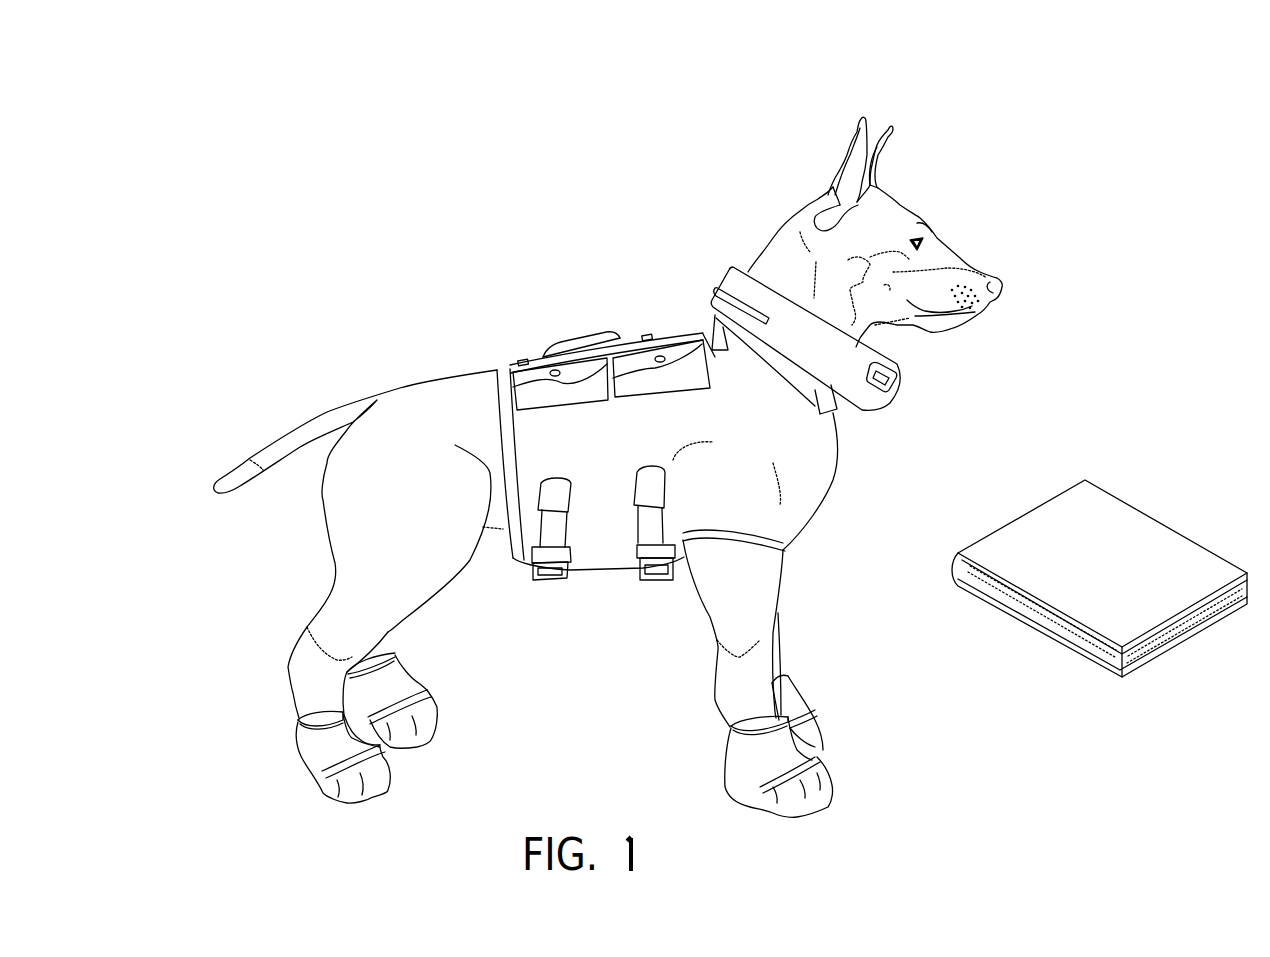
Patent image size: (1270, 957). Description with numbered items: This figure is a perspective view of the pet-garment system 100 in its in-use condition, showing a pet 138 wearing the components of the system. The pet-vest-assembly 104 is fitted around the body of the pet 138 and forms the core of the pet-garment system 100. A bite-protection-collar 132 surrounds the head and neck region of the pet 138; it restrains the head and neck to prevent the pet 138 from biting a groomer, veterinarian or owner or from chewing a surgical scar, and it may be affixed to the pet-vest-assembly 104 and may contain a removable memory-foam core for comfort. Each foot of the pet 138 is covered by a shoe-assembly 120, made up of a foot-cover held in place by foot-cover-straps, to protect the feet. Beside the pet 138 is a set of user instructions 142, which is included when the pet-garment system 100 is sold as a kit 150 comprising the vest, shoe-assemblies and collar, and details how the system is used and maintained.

The pet-garment system 100 is at (665, 452).
The protective gear kit 150 is at (665, 467).
The pet 138 is at (608, 422).
The pet-vest-assembly 104 is at (634, 456).
The bite-protection-collar 132 is at (801, 340).
The shoe-assembly 120 is at (310, 752).
The user instructions 142 is at (1142, 468).